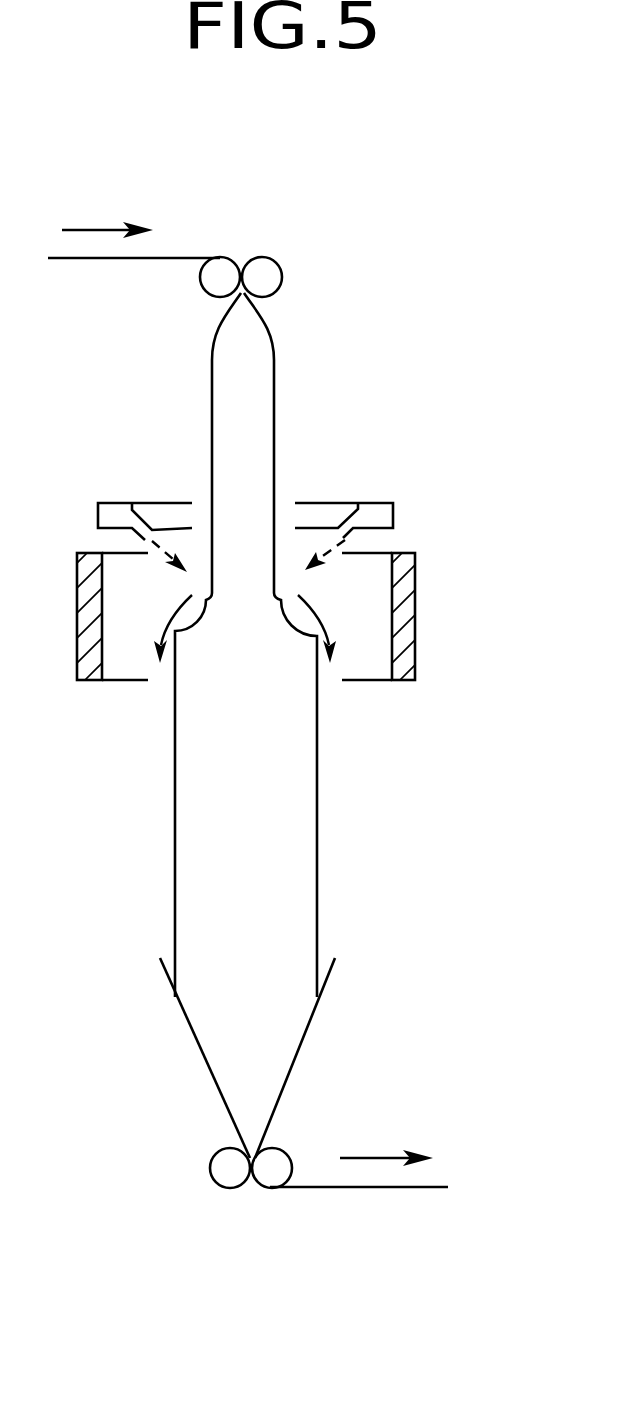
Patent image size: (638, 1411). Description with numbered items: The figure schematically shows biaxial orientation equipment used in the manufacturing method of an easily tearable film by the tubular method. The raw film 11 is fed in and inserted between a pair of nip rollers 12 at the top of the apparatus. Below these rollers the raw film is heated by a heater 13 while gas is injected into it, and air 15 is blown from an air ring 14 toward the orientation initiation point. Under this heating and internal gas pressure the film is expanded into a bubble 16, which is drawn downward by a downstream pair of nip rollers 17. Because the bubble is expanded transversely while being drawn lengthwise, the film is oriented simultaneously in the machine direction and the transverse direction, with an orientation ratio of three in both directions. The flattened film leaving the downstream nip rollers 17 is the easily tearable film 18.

The raw film 11 is at (110, 258).
The pair of nip rollers 12 is at (227, 267).
The heater 13 is at (403, 636).
The air ring 14 is at (393, 503).
The air 15 is at (325, 548).
The bubble 16 is at (318, 870).
The downstream pair of nip rollers 17 is at (232, 1175).
The easily tearable film 18 is at (408, 1187).